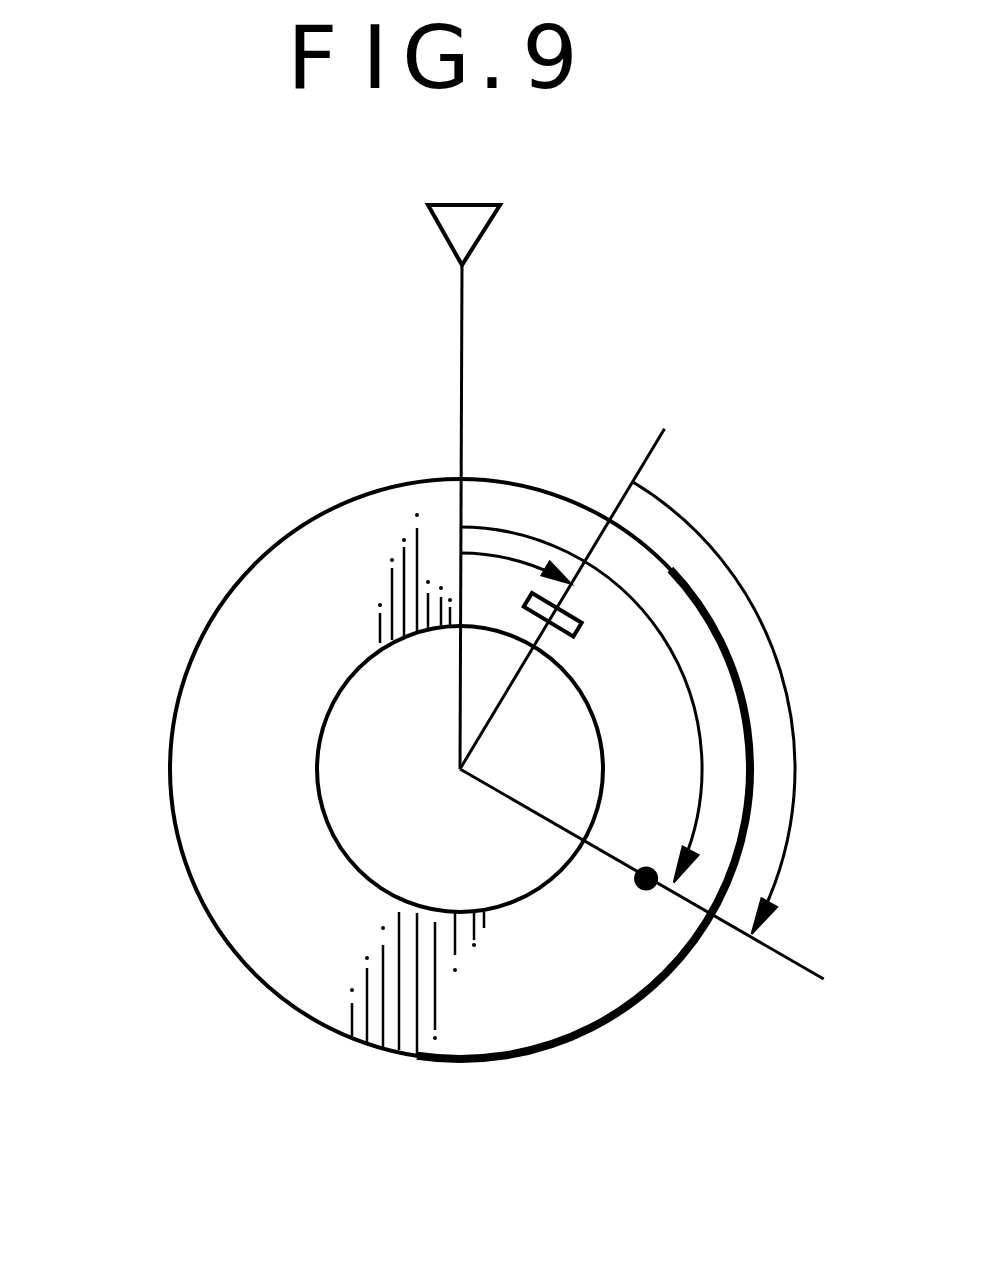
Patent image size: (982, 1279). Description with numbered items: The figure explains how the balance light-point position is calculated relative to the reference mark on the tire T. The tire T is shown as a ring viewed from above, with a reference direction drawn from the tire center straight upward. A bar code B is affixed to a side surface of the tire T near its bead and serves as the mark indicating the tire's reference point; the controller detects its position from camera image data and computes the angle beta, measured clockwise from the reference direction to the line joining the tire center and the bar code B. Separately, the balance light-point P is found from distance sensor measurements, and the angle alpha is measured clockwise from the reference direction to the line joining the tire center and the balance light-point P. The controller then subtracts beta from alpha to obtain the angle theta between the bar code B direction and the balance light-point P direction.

The tire T is at (230, 585).
The bar code B is at (580, 627).
The balance light-point P is at (628, 892).